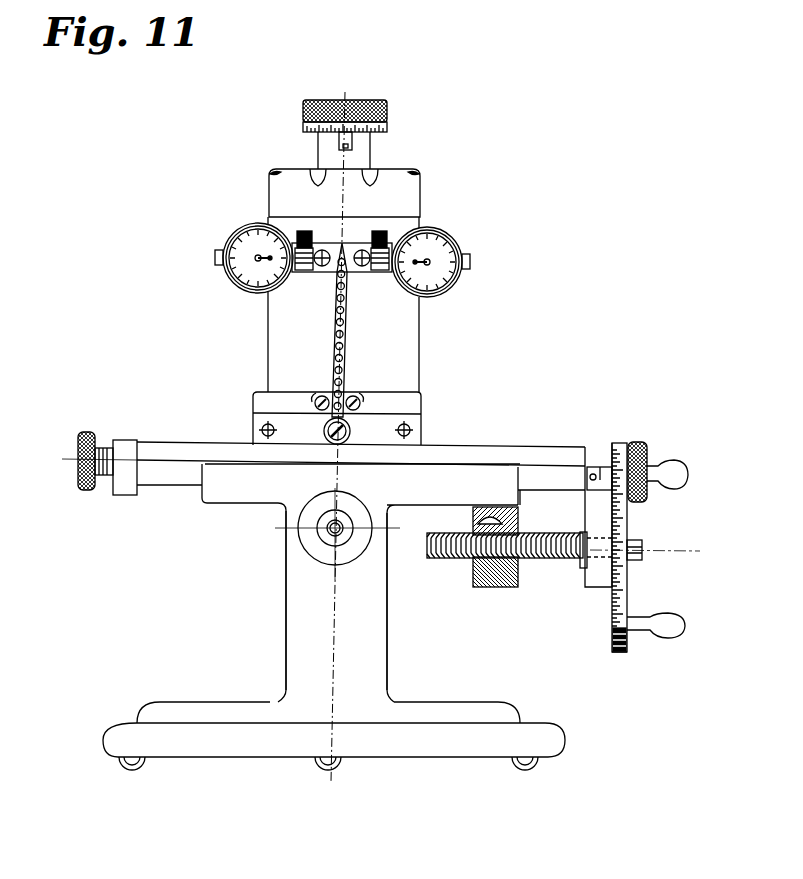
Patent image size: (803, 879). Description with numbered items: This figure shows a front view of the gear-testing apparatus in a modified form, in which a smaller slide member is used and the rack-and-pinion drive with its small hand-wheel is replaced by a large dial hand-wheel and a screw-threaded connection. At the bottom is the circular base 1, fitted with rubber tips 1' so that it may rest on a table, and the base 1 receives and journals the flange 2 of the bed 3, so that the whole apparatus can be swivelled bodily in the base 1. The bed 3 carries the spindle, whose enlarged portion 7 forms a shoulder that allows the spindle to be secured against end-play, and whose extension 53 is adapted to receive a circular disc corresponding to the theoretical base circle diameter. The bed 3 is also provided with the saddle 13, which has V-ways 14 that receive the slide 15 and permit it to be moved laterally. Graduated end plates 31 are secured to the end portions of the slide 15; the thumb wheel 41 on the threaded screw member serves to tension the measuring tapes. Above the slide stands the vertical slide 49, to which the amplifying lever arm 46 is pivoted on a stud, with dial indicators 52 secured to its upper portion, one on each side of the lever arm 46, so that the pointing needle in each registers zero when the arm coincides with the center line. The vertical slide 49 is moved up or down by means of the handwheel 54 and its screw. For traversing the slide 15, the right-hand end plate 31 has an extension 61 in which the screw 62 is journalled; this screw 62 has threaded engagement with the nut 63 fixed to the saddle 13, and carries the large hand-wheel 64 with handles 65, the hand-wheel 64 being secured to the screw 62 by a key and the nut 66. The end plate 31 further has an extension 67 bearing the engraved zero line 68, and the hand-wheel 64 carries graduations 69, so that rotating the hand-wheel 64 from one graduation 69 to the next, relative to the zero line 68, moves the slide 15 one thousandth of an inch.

The base 1 is at (347, 740).
The rubber tips 1' is at (351, 772).
The flange 2 is at (508, 705).
The bed 3 is at (370, 661).
The enlarged portion 7 is at (302, 535).
The saddle 13 is at (232, 485).
The V-ways 14 is at (173, 473).
The slide 15 is at (166, 448).
The graduated end plates 31 is at (125, 445).
The knurled thumb wheel 41 is at (88, 432).
The amplifying lever arm 46 is at (344, 343).
The vertical slide 49 is at (406, 322).
The dial indicators 52 is at (230, 242).
The extension 53 is at (322, 538).
The handwheel 54 is at (388, 113).
The extension 61 is at (590, 586).
The screw 62 is at (564, 565).
The nut 63 is at (500, 583).
The hand-wheel 64 is at (610, 630).
The handles 65 is at (670, 473).
The nut 66 is at (636, 541).
The extension 67 is at (598, 488).
The zero line 68 is at (600, 473).
The graduation 69 is at (614, 653).